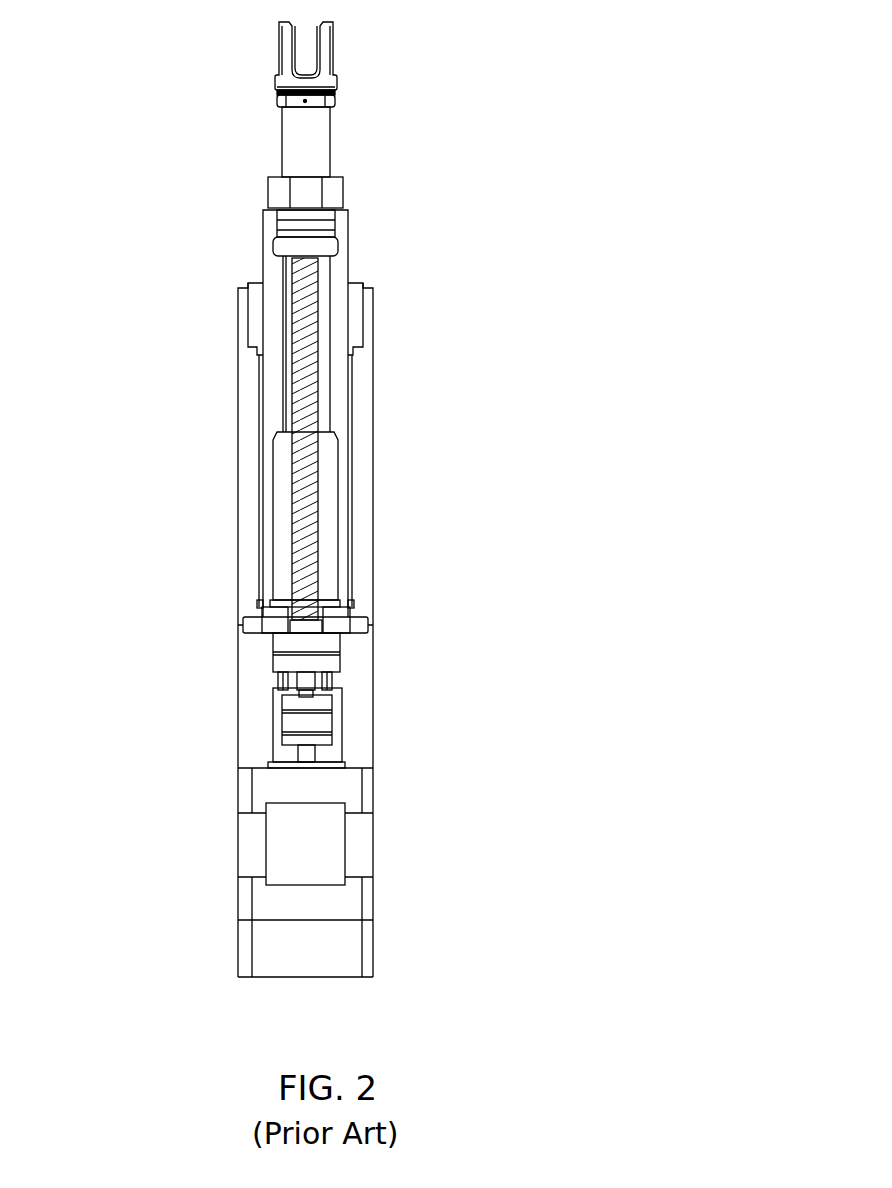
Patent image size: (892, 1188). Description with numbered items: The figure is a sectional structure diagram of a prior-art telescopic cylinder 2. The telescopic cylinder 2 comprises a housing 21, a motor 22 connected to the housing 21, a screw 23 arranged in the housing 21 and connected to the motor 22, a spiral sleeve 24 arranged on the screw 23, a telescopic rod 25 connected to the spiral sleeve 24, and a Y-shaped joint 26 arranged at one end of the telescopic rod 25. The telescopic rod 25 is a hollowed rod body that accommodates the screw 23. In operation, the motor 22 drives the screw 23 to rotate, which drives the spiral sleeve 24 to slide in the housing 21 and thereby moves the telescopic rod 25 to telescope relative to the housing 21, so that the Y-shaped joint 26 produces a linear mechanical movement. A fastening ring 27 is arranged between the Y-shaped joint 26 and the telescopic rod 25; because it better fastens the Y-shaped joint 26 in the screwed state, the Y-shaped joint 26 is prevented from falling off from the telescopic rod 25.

The telescopic cylinder 2 is at (118, 265).
The housing 21 is at (248, 487).
The motor 22 is at (252, 850).
The screw 23 is at (305, 385).
The spiral sleeve 24 is at (327, 556).
The telescopic rod 25 is at (315, 135).
The Y-shaped joint 26 is at (327, 46).
The fastening ring 27 is at (277, 100).